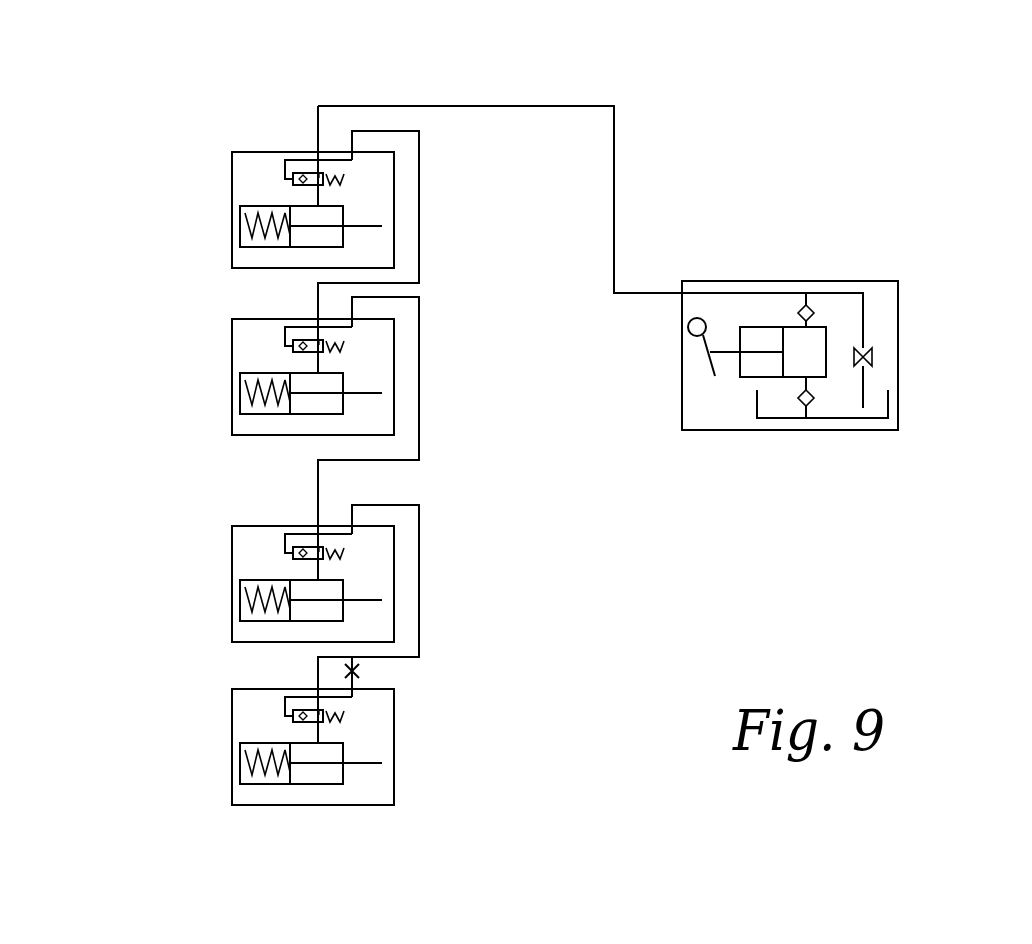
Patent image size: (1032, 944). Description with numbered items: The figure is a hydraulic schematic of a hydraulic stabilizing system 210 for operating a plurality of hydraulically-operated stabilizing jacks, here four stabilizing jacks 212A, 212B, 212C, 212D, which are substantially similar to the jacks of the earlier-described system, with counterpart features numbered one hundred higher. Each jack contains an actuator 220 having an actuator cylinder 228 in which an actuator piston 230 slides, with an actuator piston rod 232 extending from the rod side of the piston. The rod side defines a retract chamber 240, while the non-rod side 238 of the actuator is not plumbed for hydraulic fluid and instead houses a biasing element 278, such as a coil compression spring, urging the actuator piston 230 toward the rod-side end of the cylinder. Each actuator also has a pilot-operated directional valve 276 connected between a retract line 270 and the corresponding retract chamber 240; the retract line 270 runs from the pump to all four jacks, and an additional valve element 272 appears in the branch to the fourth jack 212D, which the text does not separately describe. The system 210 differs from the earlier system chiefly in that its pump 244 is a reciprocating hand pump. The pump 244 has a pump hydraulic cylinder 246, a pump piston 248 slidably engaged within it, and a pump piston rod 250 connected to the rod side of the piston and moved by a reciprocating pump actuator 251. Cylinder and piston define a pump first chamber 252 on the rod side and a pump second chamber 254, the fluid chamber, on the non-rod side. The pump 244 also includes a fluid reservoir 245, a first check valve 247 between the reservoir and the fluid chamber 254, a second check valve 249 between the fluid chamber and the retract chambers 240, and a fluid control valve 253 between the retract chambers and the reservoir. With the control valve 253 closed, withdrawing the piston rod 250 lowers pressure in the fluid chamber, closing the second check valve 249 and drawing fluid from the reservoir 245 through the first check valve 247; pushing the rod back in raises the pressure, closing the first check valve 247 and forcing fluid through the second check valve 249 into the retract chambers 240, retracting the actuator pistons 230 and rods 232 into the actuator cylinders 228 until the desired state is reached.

The hydraulic stabilizing system 210 is at (818, 616).
The stabilizing jack 212A is at (395, 214).
The stabilizing jack 212B is at (394, 355).
The stabilizing jack 212C is at (394, 573).
The stabilizing jack 212D is at (390, 731).
The actuator 220 is at (314, 243).
The actuator cylinder 228 is at (257, 206).
The actuator piston 230 is at (297, 205).
The actuator piston rod 232 is at (372, 226).
The non-rod side 238 is at (257, 242).
The retract chamber 240 is at (332, 237).
The pump 244 is at (805, 344).
The fluid reservoir 245 is at (882, 418).
The pump hydraulic cylinder 246 is at (755, 327).
The first check valve 247 is at (802, 403).
The pump piston 248 is at (785, 327).
The second check valve 249 is at (810, 307).
The pump piston rod 250 is at (733, 352).
The reciprocating pump actuator 251 is at (690, 334).
The pump first chamber 252 is at (782, 345).
The fluid control valve 253 is at (885, 357).
The pump second chamber 254 is at (818, 365).
The retract line 270 is at (482, 105).
The shutoff valve 272 is at (359, 671).
The pilot-operated directional valve 276 is at (297, 172).
The biasing element 278 is at (257, 226).